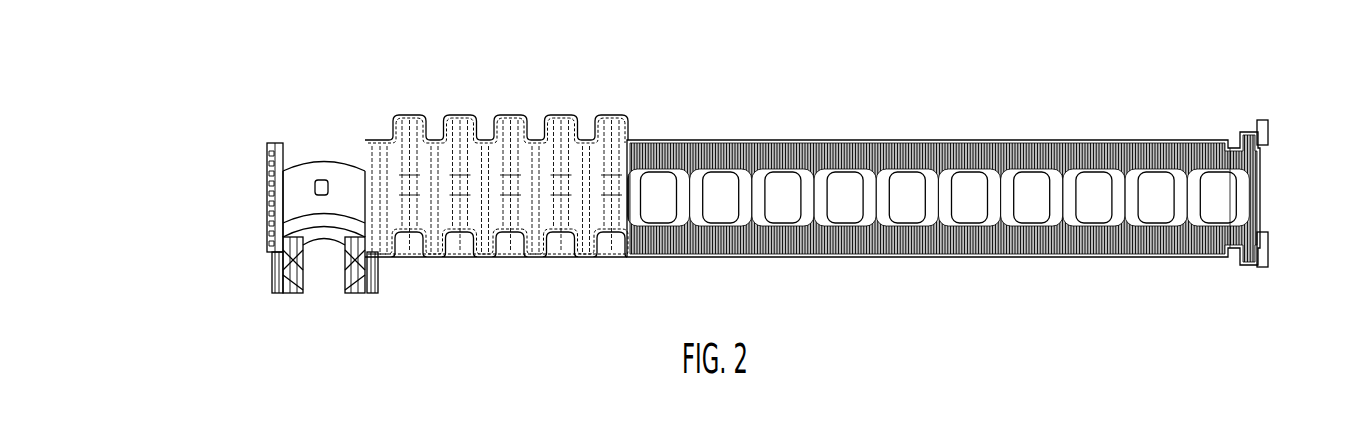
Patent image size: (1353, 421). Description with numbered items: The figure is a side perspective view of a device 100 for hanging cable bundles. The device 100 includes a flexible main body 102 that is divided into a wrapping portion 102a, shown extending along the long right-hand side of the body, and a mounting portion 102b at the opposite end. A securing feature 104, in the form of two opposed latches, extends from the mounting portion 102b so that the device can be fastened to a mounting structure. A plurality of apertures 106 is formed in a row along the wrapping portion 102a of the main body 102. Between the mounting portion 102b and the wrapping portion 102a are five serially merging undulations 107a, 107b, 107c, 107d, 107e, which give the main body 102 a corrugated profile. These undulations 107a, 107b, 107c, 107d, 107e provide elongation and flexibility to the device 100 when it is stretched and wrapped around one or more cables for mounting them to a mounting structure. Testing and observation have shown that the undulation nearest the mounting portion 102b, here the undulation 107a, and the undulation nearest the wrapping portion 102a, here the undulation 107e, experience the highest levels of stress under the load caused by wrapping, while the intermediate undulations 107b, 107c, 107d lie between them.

The device 100 is at (1295, 172).
The flexible main body 102 is at (918, 80).
The wrapping portion 102a is at (1156, 150).
The mounting portion 102b is at (298, 203).
The securing feature 104 is at (293, 292).
The apertures 106 is at (840, 185).
The first undulation 107a is at (410, 118).
The second undulation 107b is at (463, 118).
The third undulation 107c is at (512, 118).
The fourth undulation 107d is at (565, 118).
The fifth undulation 107e is at (610, 118).